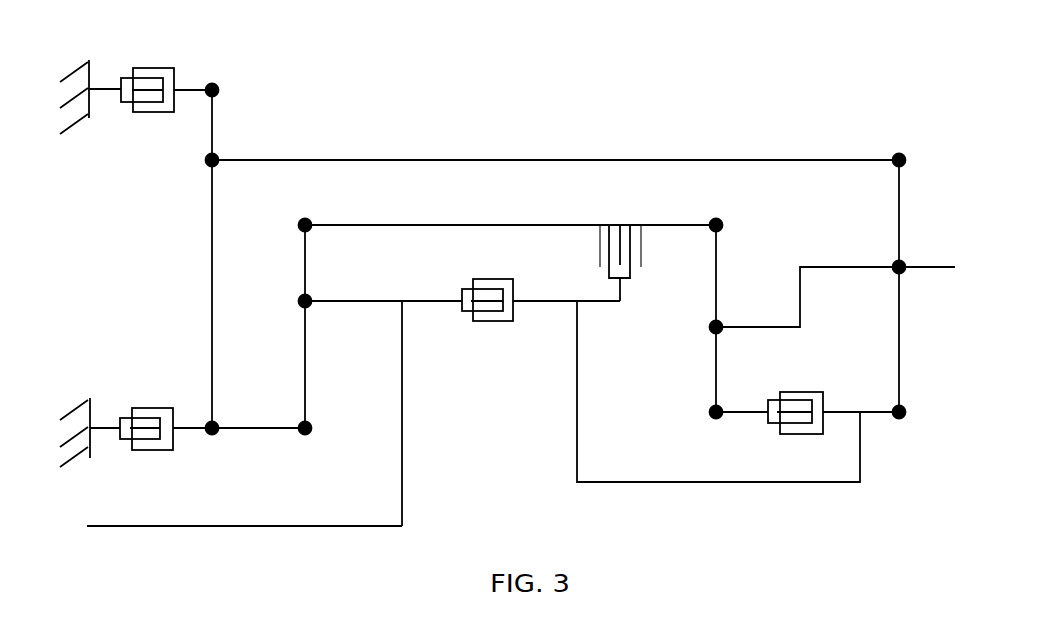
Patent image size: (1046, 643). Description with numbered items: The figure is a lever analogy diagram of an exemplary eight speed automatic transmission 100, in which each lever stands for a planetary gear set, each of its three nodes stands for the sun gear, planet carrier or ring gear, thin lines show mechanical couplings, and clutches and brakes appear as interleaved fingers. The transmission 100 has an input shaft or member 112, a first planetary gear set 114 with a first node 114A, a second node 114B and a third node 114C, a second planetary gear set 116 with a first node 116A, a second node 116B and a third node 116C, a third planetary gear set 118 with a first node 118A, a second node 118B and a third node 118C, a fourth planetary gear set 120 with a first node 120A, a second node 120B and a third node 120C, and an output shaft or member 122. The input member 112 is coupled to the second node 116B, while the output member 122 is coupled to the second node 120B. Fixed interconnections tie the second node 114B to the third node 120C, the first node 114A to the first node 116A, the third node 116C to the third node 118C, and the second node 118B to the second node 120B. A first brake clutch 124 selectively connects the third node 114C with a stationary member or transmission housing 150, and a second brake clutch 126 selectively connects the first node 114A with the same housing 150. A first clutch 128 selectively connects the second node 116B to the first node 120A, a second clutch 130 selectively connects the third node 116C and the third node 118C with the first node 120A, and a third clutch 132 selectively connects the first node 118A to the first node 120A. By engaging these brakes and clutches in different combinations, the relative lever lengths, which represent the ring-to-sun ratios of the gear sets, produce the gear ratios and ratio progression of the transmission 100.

The eight speed transmission 100 is at (828, 84).
The input shaft or member 112 is at (203, 529).
The first planetary gear set 114 is at (238, 126).
The first node of first planetary gear set 114A is at (213, 436).
The second node of first planetary gear set 114B is at (205, 160).
The third node of first planetary gear set 114C is at (212, 84).
The second planetary gear set 116 is at (288, 545).
The first node of second planetary gear set 116A is at (307, 436).
The second node of second planetary gear set 116B is at (298, 300).
The third node of second planetary gear set 116C is at (298, 223).
The third planetary gear set 118 is at (697, 140).
The first node of third planetary gear set 118A is at (709, 413).
The second node of third planetary gear set 118B is at (708, 328).
The third node of third planetary gear set 118C is at (722, 223).
The fourth planetary gear set 120 is at (908, 382).
The first node of fourth planetary gear set 120A is at (900, 420).
The second node of fourth planetary gear set 120B is at (893, 262).
The third node of fourth planetary gear set 120C is at (900, 153).
The output shaft or member 122 is at (928, 267).
The first brake clutch 124 is at (152, 68).
The second brake clutch 126 is at (152, 407).
The first clutch 128 is at (497, 322).
The second clutch 130 is at (597, 236).
The third clutch 132 is at (812, 391).
The stationary member or transmission housing 150 is at (77, 118).